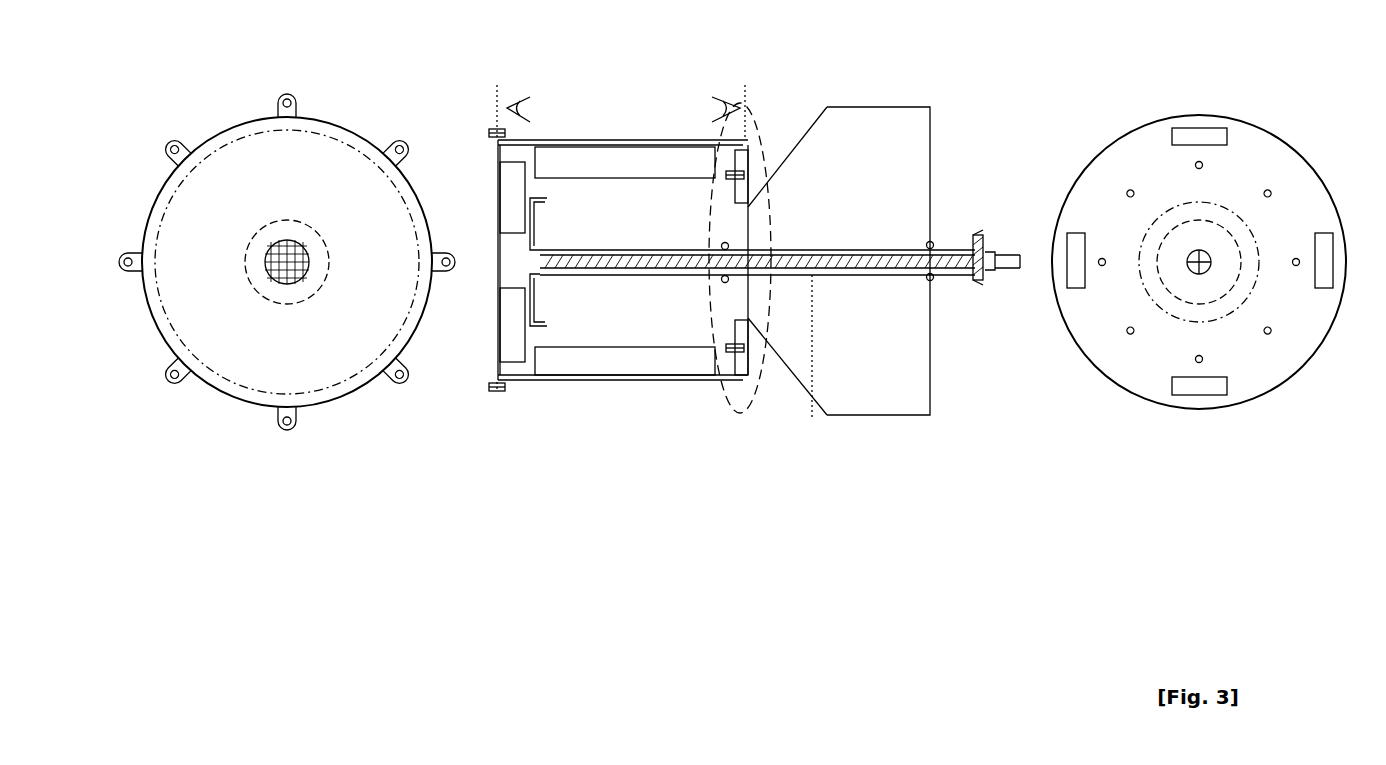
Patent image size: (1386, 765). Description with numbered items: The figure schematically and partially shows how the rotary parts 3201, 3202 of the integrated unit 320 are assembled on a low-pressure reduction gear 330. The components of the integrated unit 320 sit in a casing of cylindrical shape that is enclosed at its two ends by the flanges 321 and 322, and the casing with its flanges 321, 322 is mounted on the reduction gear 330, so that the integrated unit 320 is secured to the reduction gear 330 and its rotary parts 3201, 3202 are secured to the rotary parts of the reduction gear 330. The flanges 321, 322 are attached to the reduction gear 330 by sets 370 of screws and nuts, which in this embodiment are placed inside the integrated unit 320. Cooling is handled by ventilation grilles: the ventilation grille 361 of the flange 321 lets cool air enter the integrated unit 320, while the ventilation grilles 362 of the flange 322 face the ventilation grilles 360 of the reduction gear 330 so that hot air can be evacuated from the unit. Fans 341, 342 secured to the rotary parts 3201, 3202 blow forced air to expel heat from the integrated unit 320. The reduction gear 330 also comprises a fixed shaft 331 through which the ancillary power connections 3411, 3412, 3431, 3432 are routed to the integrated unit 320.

The integrated unit 320 is at (628, 445).
The rotary part 3201 is at (625, 160).
The rotary part 3202 is at (595, 365).
The flange 321 is at (230, 190).
The flange 322 is at (1278, 180).
The low-pressure reduction gear 330 is at (900, 420).
The fixed shaft 331 is at (757, 346).
The fan 341 is at (512, 178).
The fan 342 is at (512, 360).
The ancillary power connection 3411 is at (978, 245).
The ancillary power connection 3412 is at (985, 280).
The ancillary power connection 3431 is at (1012, 258).
The ancillary power connection 3432 is at (1015, 272).
The ventilation grille 360 is at (748, 160).
The ventilation grille 361 is at (493, 257).
The ventilation grille 362 is at (735, 170).
The set of screws and nuts 370 is at (1200, 357).